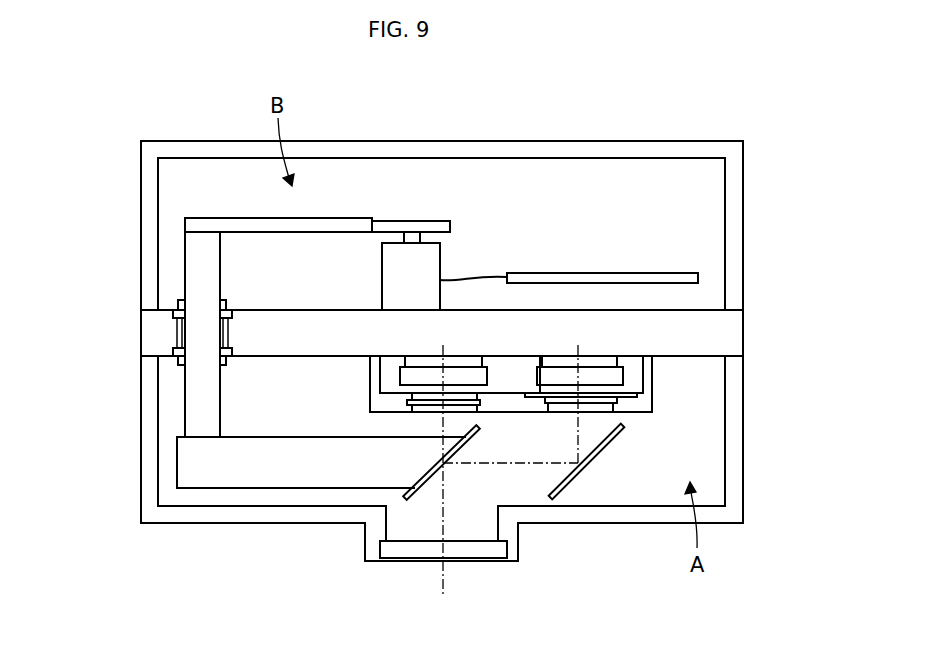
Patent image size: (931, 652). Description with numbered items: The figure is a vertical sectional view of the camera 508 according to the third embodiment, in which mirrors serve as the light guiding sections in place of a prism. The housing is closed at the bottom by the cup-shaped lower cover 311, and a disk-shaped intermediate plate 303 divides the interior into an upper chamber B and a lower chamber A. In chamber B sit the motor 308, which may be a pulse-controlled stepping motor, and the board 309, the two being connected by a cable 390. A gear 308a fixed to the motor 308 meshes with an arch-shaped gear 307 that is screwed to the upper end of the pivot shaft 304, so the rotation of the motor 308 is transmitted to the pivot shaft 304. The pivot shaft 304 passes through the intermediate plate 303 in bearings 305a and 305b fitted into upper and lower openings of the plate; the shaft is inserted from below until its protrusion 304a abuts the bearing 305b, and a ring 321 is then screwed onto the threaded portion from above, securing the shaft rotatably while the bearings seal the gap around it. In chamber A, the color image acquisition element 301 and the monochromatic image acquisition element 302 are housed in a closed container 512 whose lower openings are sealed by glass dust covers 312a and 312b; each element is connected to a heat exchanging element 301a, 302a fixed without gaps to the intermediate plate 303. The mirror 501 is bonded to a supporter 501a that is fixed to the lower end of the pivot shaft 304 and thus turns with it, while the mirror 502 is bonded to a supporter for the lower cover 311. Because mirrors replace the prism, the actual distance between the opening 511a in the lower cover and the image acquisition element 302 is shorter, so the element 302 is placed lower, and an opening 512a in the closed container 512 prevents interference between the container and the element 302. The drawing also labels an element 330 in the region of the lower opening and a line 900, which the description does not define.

The camera 508 is at (557, 126).
The lower cover 311 is at (157, 503).
The opening 511a is at (370, 535).
The intermediate plate 303 is at (257, 327).
The arch-shaped gear 307 is at (314, 218).
The gear 308a is at (434, 219).
The motor 308 is at (382, 278).
The cable 390 is at (486, 275).
The board 309 is at (628, 273).
The pivot shaft 304 is at (185, 243).
The ring 321 is at (180, 304).
The bearing 305a is at (175, 317).
The bearing 305b is at (175, 352).
The protrusion 304a is at (183, 359).
The closed container 512 is at (372, 396).
The heat exchanging element 301a is at (408, 358).
The color image acquisition element 301 is at (400, 377).
The glass dust cover 312a is at (416, 410).
The heat exchanging element 302a is at (650, 367).
The monochromatic image acquisition element 302 is at (640, 385).
The opening 512a is at (635, 408).
The glass dust cover 312b is at (572, 413).
The supporter 501a is at (205, 476).
The mirror 501 is at (417, 492).
The mirror 502 is at (577, 478).
The transparent window plate 330 is at (393, 557).
The optical axis 900 is at (445, 583).